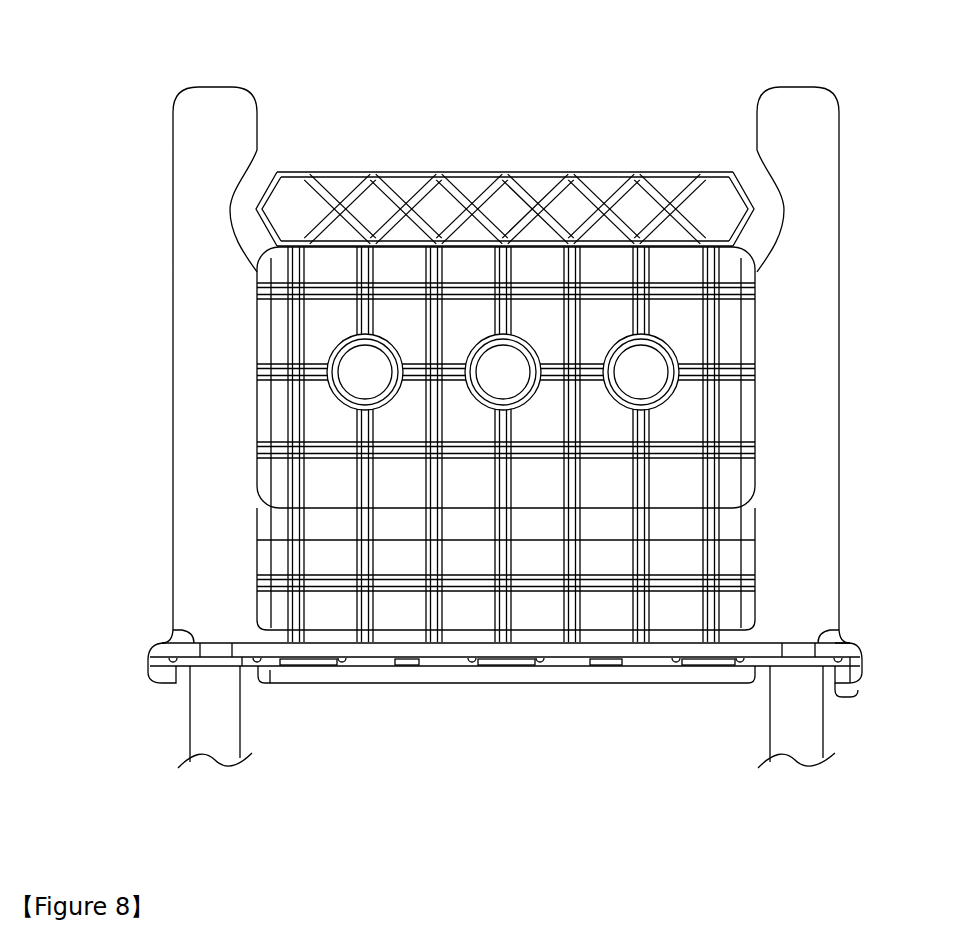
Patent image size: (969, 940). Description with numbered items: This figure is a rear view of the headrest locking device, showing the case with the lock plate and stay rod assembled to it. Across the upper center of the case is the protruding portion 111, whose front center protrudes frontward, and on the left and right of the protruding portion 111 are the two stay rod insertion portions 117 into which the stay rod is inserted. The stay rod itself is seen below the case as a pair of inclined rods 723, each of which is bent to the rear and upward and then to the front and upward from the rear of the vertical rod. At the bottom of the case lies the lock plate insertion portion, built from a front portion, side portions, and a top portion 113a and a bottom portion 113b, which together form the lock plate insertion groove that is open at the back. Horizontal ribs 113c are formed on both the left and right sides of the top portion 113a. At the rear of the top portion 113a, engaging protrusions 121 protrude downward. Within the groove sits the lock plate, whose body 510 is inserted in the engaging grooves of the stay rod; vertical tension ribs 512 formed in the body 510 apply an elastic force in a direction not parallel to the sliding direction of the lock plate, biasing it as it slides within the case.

The stay rod insertion portion 117 is at (226, 112).
The protruding portion 111 is at (507, 207).
The top portion 113a is at (838, 652).
The bottom portion 113b is at (725, 684).
The rib 113c is at (755, 660).
The inclined rod 723 is at (202, 712).
The body 510 is at (248, 667).
The engaging protrusion 121 is at (307, 670).
The vertical tension rib 512 is at (403, 668).